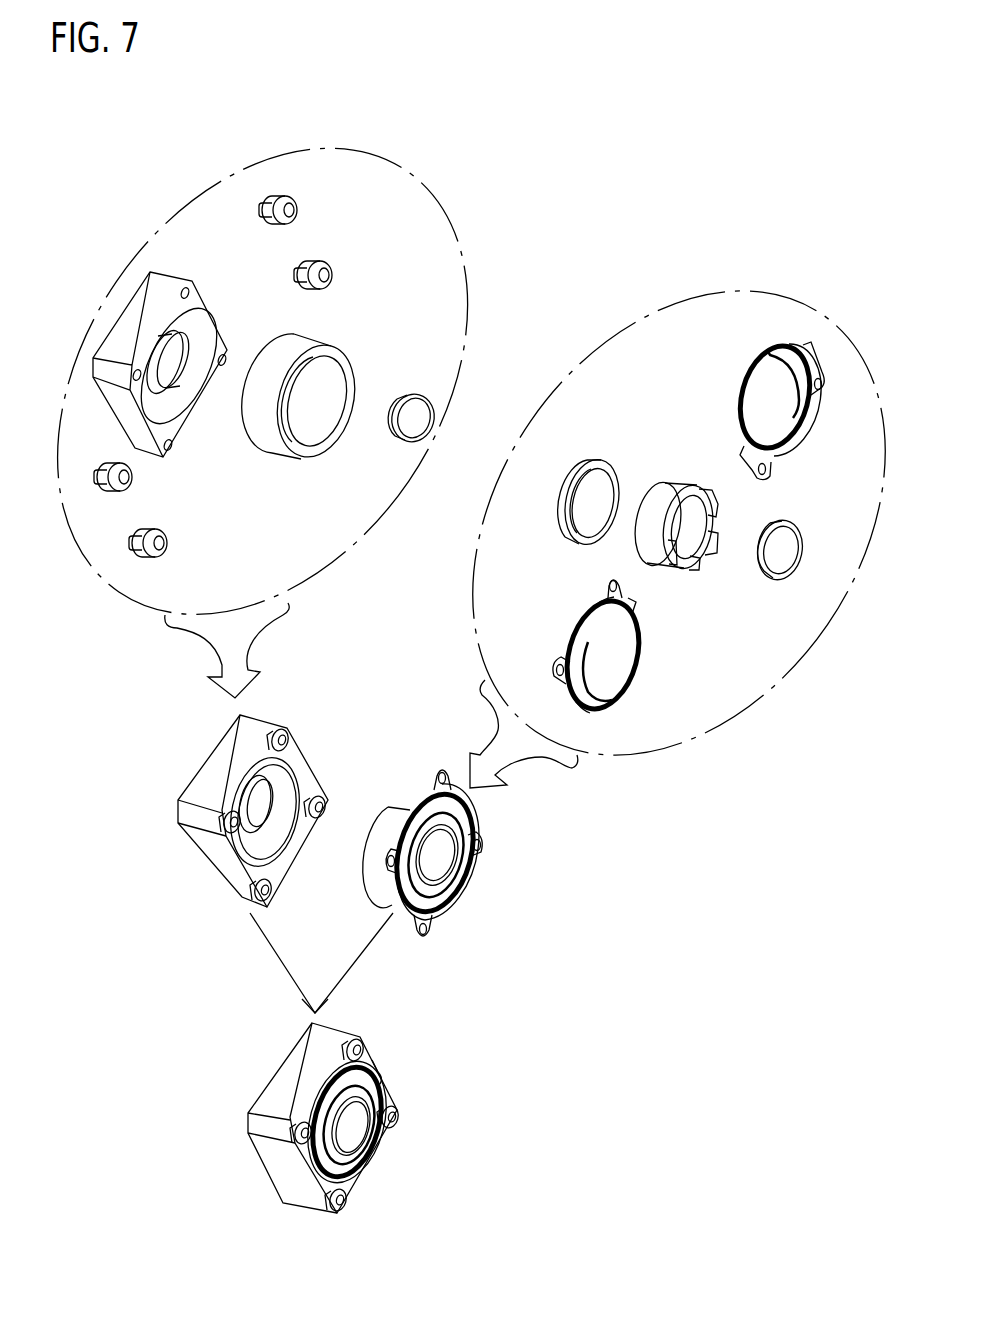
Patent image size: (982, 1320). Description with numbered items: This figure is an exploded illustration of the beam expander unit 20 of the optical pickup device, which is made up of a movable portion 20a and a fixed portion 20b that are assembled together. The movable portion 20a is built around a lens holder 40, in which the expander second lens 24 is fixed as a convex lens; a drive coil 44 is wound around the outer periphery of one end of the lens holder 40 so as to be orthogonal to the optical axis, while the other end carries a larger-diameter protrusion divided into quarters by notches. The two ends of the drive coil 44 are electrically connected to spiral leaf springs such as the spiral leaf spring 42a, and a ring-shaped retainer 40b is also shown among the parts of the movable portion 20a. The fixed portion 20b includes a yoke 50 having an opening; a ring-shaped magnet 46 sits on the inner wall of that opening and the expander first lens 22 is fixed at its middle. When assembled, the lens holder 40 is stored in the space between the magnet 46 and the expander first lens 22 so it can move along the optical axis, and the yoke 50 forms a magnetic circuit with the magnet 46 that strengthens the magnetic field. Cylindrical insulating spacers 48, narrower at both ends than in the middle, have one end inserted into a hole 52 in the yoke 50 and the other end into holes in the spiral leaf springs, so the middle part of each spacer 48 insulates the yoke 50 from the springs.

The beam expander unit 20 is at (226, 1106).
The movable portion 20a is at (443, 913).
The fixed portion 20b is at (197, 853).
The expander first lens 22 is at (431, 396).
The expander second lens 24 is at (782, 533).
The lens holder 40 is at (707, 557).
The retaining ring 40b is at (633, 670).
The spiral leaf spring 42a is at (822, 378).
The drive coil 44 is at (603, 462).
The ring-shaped magnet 46 is at (351, 366).
The spacer 48 is at (286, 193).
The yoke 50 is at (137, 303).
The hole 52 is at (192, 288).